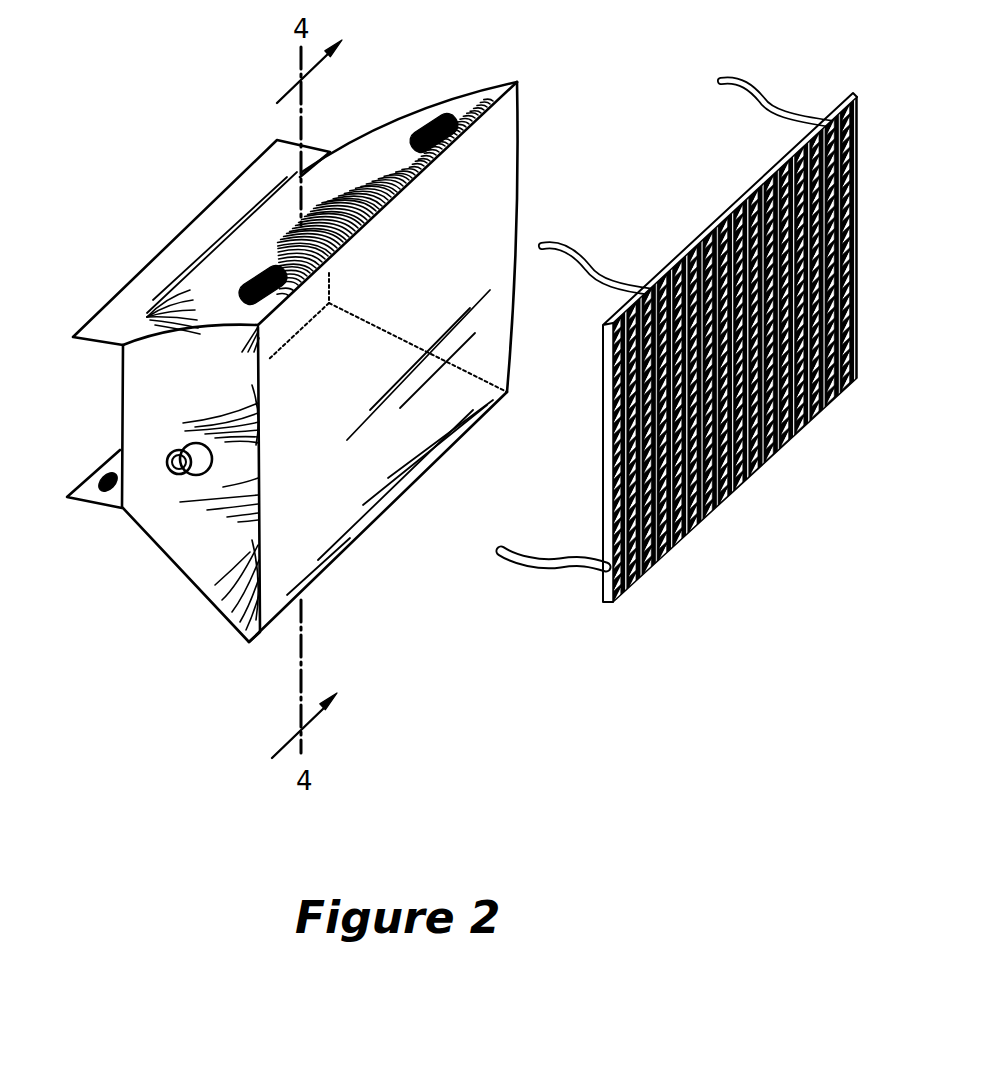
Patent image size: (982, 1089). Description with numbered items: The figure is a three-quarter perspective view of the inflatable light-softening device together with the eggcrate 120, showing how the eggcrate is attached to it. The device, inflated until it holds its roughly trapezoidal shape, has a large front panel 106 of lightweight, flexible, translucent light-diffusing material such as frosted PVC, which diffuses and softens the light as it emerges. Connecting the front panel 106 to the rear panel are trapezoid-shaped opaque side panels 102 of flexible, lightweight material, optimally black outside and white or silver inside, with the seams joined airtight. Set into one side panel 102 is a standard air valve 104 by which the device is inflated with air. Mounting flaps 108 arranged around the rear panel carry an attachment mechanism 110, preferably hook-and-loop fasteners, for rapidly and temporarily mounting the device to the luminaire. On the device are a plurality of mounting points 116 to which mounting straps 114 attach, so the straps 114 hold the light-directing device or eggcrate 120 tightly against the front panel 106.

The opaque side panel 102 is at (212, 583).
The standard air valve 104 is at (173, 473).
The front panel of light-diffusive translucent material 106 is at (393, 490).
The flaps 108 is at (170, 250).
The attachment mechanism 110 is at (92, 480).
The mounting strap 114 is at (590, 258).
The mounting point 116 is at (427, 120).
The light-directing device 120 is at (753, 508).